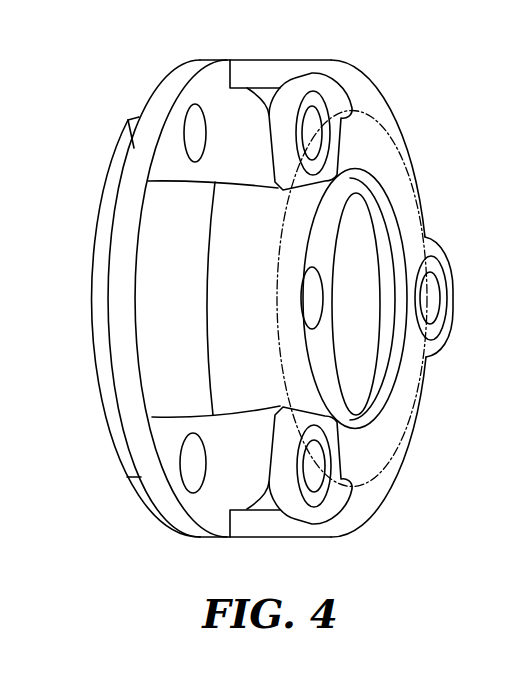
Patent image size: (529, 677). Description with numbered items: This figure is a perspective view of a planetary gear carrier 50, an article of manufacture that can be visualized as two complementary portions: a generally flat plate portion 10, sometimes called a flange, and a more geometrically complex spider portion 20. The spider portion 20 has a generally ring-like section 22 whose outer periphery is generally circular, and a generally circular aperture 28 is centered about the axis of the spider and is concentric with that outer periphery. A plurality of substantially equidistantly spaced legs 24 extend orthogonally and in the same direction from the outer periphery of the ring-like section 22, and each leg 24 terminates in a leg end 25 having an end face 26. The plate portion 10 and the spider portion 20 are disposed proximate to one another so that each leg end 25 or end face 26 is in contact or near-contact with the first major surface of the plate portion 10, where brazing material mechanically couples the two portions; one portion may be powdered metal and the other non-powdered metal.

The plate portion 10 is at (180, 85).
The spider portion 20 is at (390, 172).
The ring-like section 22 is at (385, 437).
The leg 24 is at (266, 72).
The leg end 25 is at (163, 200).
The end face 26 is at (135, 250).
The circular aperture 28 is at (374, 248).
The planetary gear carrier 50 is at (118, 97).